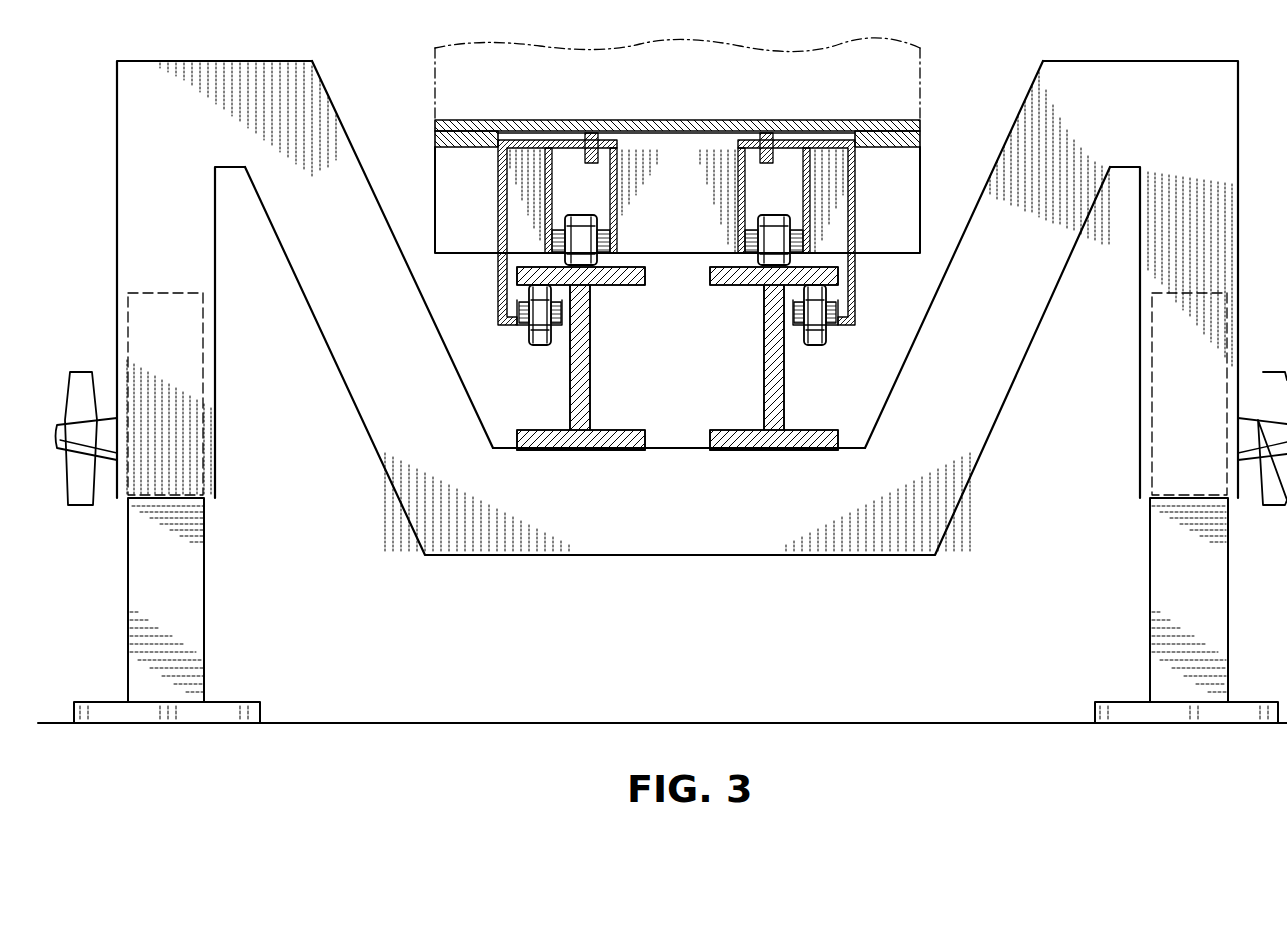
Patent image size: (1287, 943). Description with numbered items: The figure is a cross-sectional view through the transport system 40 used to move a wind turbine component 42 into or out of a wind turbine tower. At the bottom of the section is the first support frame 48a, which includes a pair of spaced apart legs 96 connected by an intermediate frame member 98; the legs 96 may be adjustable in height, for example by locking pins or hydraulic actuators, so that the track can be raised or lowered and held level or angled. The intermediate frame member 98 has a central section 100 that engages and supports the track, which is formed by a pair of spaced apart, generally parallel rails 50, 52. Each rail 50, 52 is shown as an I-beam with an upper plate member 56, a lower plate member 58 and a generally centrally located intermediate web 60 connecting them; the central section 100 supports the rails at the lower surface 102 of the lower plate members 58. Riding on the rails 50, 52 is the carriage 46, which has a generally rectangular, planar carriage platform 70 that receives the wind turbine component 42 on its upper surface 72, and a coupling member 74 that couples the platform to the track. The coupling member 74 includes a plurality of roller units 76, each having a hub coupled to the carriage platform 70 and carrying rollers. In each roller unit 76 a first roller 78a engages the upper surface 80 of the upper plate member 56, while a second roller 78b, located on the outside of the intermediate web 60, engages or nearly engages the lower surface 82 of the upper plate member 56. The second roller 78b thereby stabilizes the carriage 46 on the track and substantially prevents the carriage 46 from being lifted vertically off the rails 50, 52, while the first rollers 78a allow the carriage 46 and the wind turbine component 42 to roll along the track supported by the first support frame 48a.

The transport system 40 is at (985, 40).
The wind turbine component 42 is at (435, 88).
The carriage 46 is at (924, 172).
The first support frame 48a is at (116, 122).
The rail 50 is at (570, 410).
The rail 52 is at (766, 410).
The upper plate member 56 is at (632, 286).
The lower plate member 58 is at (620, 434).
The intermediate web 60 is at (589, 363).
The carriage platform 70 is at (445, 135).
The upper surface 72 is at (478, 120).
The coupling member 74 is at (445, 172).
The roller unit 76 is at (497, 200).
The first roller 78a is at (582, 214).
The second roller 78b is at (540, 346).
The upper surface 80 is at (527, 290).
The lower surface 82 is at (519, 288).
The leg 96 is at (137, 563).
The intermediate frame member 98 is at (127, 243).
The central section 100 is at (689, 516).
The lower surface 102 is at (575, 452).